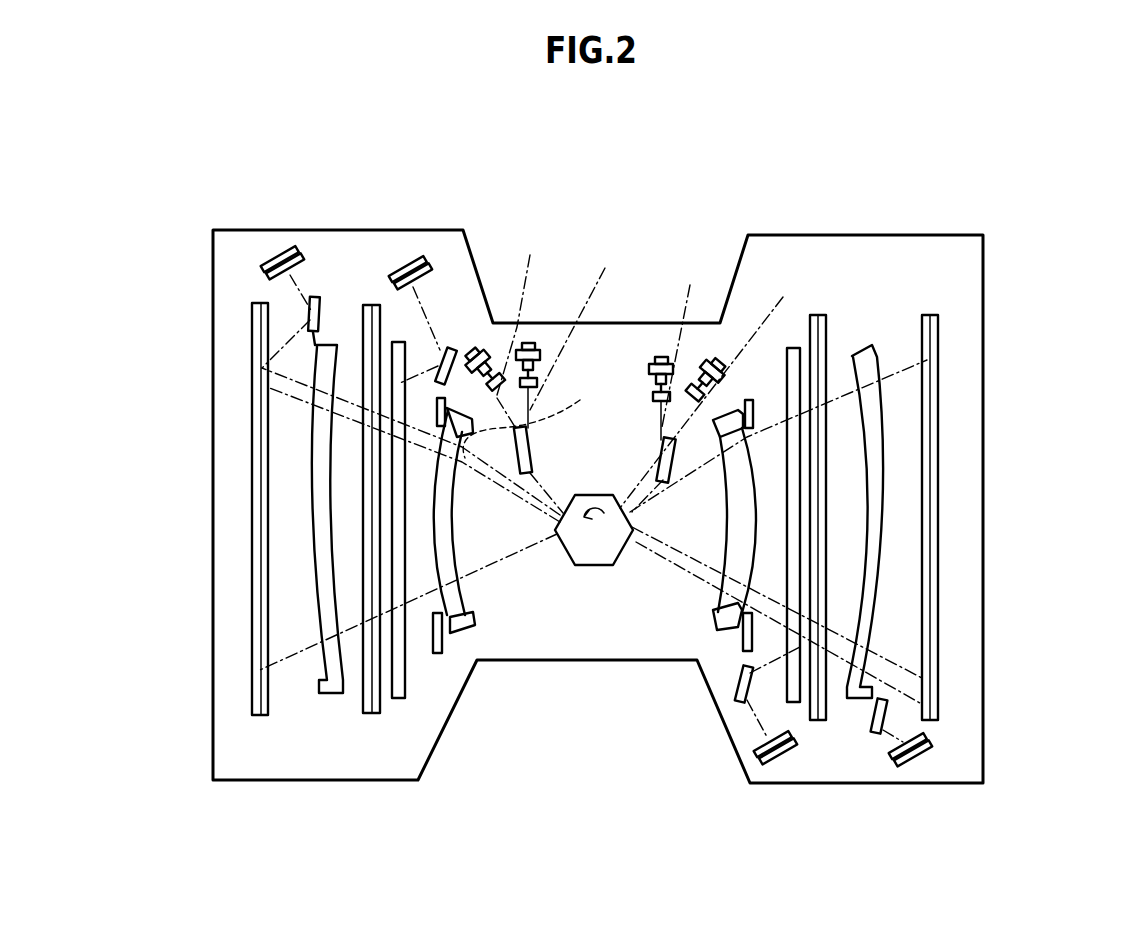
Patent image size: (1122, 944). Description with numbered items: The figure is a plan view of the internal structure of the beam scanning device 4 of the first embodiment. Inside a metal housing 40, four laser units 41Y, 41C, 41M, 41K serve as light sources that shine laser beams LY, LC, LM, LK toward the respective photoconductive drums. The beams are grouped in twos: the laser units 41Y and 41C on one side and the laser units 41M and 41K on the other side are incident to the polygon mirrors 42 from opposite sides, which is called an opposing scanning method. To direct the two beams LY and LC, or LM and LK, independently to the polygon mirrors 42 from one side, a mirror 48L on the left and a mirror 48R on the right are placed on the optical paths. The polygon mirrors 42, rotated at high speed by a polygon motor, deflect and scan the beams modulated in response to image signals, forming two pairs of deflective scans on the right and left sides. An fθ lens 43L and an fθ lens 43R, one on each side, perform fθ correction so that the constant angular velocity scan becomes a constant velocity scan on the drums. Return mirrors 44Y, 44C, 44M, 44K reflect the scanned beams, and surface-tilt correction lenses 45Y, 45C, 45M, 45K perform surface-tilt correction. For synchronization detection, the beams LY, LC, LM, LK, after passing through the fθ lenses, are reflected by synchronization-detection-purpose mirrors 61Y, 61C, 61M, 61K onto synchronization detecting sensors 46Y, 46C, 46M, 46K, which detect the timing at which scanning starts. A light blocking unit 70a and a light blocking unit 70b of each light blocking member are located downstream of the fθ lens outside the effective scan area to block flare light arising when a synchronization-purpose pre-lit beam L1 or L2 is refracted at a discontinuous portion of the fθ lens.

The beam scanning device 4 is at (910, 82).
The metal housing 40 is at (817, 235).
The laser unit 41Y is at (482, 350).
The laser unit 41C is at (528, 343).
The laser unit 41M is at (660, 357).
The laser unit 41K is at (714, 355).
The polygon mirrors 42 is at (584, 566).
The fθ lens 43L is at (470, 650).
The fθ lens 43R is at (720, 640).
The return mirror 44Y is at (260, 410).
The return mirror 44C is at (370, 532).
The return mirror 44M is at (820, 332).
The return mirror 44K is at (933, 457).
The surface-tilt correction lens 45Y is at (313, 480).
The surface-tilt correction lens 45C is at (397, 577).
The surface-tilt correction lens 45M is at (800, 555).
The surface-tilt correction lens 45K is at (880, 533).
The synchronization detecting sensor 46Y is at (280, 253).
The synchronization detecting sensor 46C is at (405, 262).
The synchronization detecting sensor 46M is at (777, 767).
The synchronization detecting sensor 46K is at (910, 767).
The mirror 48L is at (532, 455).
The mirror 48R is at (660, 457).
The synchronization-detection-purpose mirror 61Y is at (307, 317).
The synchronization-detection-purpose mirror 61C is at (446, 345).
The synchronization-detection-purpose mirror 61M is at (727, 703).
The synchronization-detection-purpose mirror 61K is at (875, 737).
The light blocking unit 70a is at (463, 407).
The light blocking unit 70b is at (742, 427).
The laser beam LY is at (530, 368).
The laser beam LC is at (576, 327).
The laser beam LM is at (666, 383).
The laser beam LK is at (709, 389).
The synchronization-purpose pre-lit beam L1 is at (700, 562).
The synchronization-purpose pre-lit beam L2 is at (532, 414).